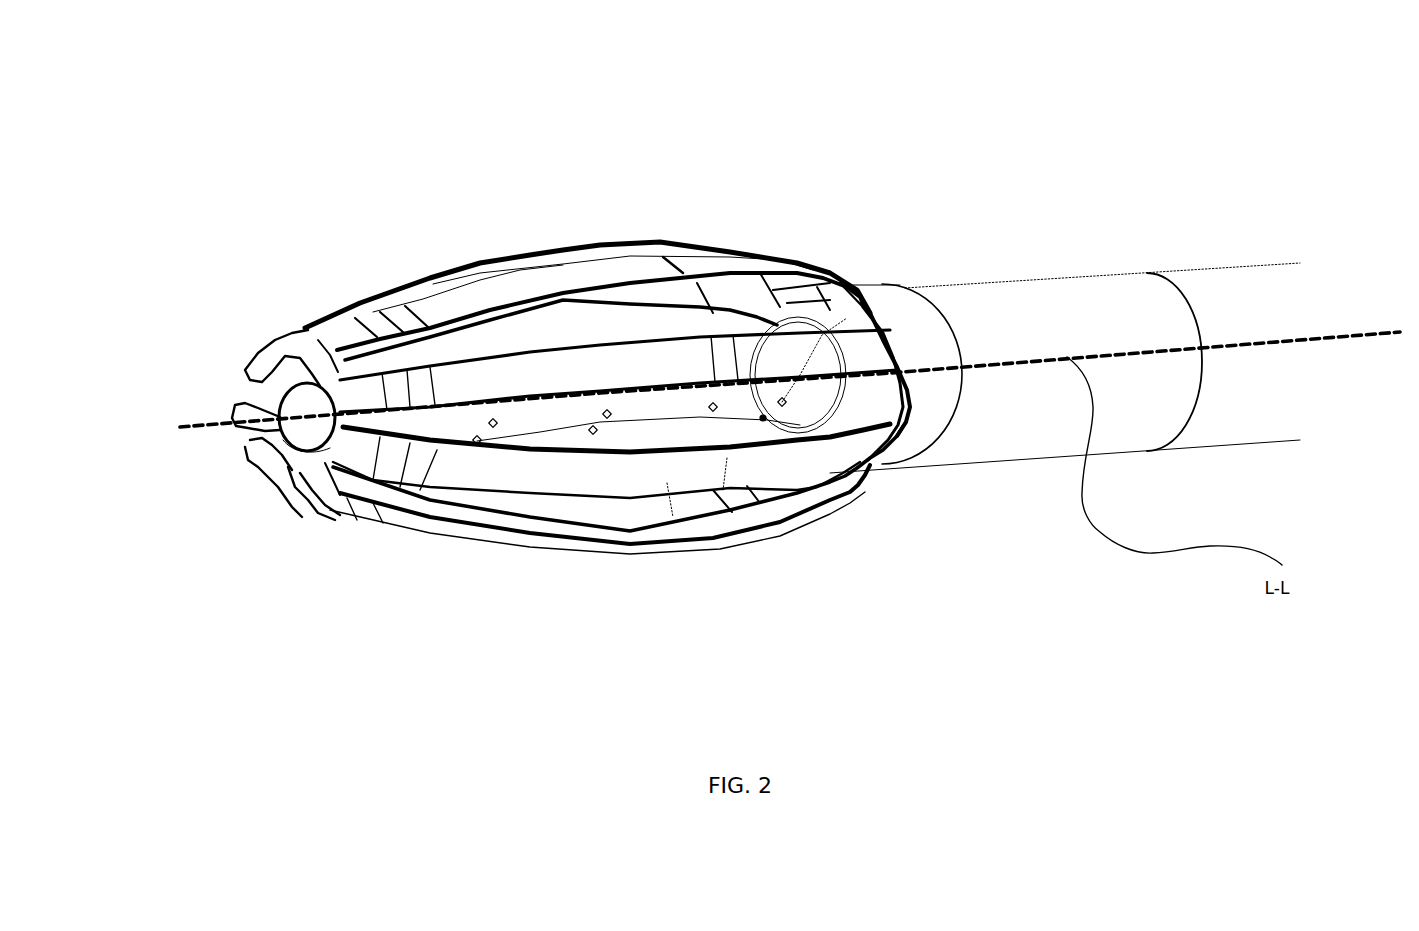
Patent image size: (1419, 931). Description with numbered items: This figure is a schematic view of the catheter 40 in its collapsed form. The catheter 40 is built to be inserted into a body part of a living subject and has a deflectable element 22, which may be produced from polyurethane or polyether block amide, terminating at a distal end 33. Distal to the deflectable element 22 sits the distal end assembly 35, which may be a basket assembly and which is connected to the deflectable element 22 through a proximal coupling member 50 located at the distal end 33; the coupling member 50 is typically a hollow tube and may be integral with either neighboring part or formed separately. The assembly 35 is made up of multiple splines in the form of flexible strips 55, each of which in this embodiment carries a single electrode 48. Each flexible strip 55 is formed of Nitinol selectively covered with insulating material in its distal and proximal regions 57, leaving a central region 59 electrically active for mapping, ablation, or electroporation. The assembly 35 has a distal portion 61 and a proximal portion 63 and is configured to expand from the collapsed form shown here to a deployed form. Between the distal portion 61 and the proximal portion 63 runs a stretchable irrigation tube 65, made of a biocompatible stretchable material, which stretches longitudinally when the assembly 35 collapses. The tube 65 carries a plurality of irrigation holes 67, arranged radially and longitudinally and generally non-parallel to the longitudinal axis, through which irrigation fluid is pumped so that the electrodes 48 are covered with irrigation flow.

The deflectable element 22 is at (1204, 270).
The distal end 33 is at (1065, 305).
The distal end assembly 35 is at (587, 252).
The catheter 40 is at (324, 112).
The electrode 48 is at (603, 376).
The proximal coupling member 50 is at (947, 303).
The flexible strip 55 is at (618, 364).
The distal and proximal regions 57 is at (180, 422).
The central region 59 is at (596, 420).
The distal portion 61 is at (286, 384).
The proximal portion 63 is at (935, 445).
The stretchable irrigation tube 65 is at (780, 494).
The irrigation holes 67 is at (638, 276).